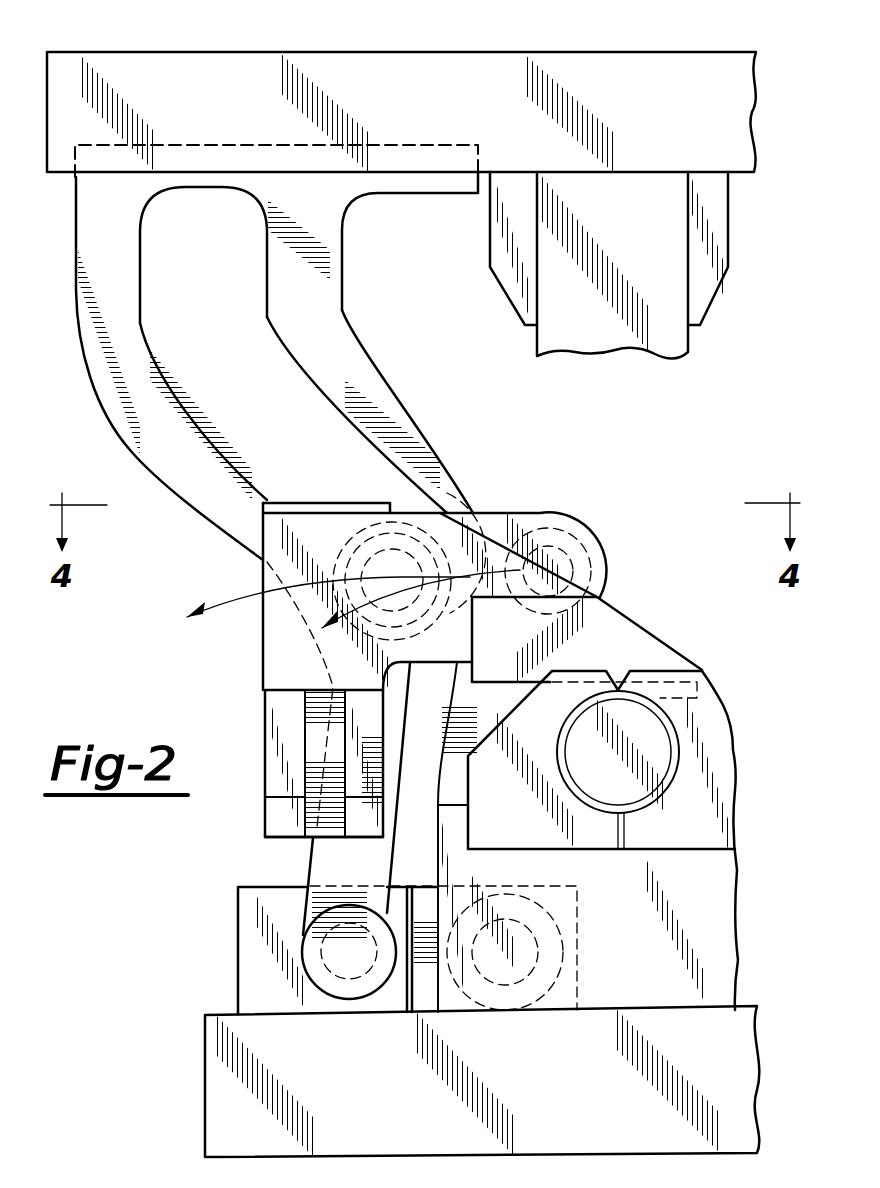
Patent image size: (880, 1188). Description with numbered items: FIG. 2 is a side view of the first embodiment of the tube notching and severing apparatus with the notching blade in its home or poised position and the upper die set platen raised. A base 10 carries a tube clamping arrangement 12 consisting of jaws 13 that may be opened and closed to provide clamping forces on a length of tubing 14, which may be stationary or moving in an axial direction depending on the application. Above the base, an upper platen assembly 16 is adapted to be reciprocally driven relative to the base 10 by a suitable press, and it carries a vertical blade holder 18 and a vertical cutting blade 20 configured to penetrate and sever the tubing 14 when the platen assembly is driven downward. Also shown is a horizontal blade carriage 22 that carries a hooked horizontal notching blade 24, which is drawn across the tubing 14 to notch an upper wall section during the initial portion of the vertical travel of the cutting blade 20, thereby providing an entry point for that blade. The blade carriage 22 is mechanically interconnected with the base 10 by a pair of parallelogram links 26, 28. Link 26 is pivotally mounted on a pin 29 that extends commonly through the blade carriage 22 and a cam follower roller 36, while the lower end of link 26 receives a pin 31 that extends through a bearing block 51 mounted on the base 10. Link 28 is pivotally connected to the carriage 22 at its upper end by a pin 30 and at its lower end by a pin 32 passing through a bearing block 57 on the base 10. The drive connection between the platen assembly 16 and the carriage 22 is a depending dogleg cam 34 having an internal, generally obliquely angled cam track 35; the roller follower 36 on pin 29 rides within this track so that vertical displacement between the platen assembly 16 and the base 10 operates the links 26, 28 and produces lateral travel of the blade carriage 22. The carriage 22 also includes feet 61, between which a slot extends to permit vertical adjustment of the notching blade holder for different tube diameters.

The base 10 is at (652, 1015).
The tube clamping arrangement 12 is at (738, 678).
The jaws 13 is at (717, 743).
The tubing 14 is at (653, 800).
The upper platen assembly 16 is at (658, 55).
The vertical blade holder 18 is at (720, 235).
The vertical cutting blade 20 is at (652, 345).
The horizontal blade carriage 22 is at (263, 632).
The hooked horizontal notching blade 24 is at (630, 637).
The link 26 is at (313, 853).
The link 28 is at (458, 712).
The pin 29 is at (377, 500).
The pin 30 is at (608, 543).
The pin 31 is at (320, 955).
The pin 32 is at (540, 935).
The dogleg cam 34 is at (387, 372).
The cam track 35 is at (303, 378).
The cam follower roller 36 is at (463, 487).
The bearing block 51 is at (238, 910).
The bearing block 57 is at (580, 972).
The feet 61 is at (270, 812).